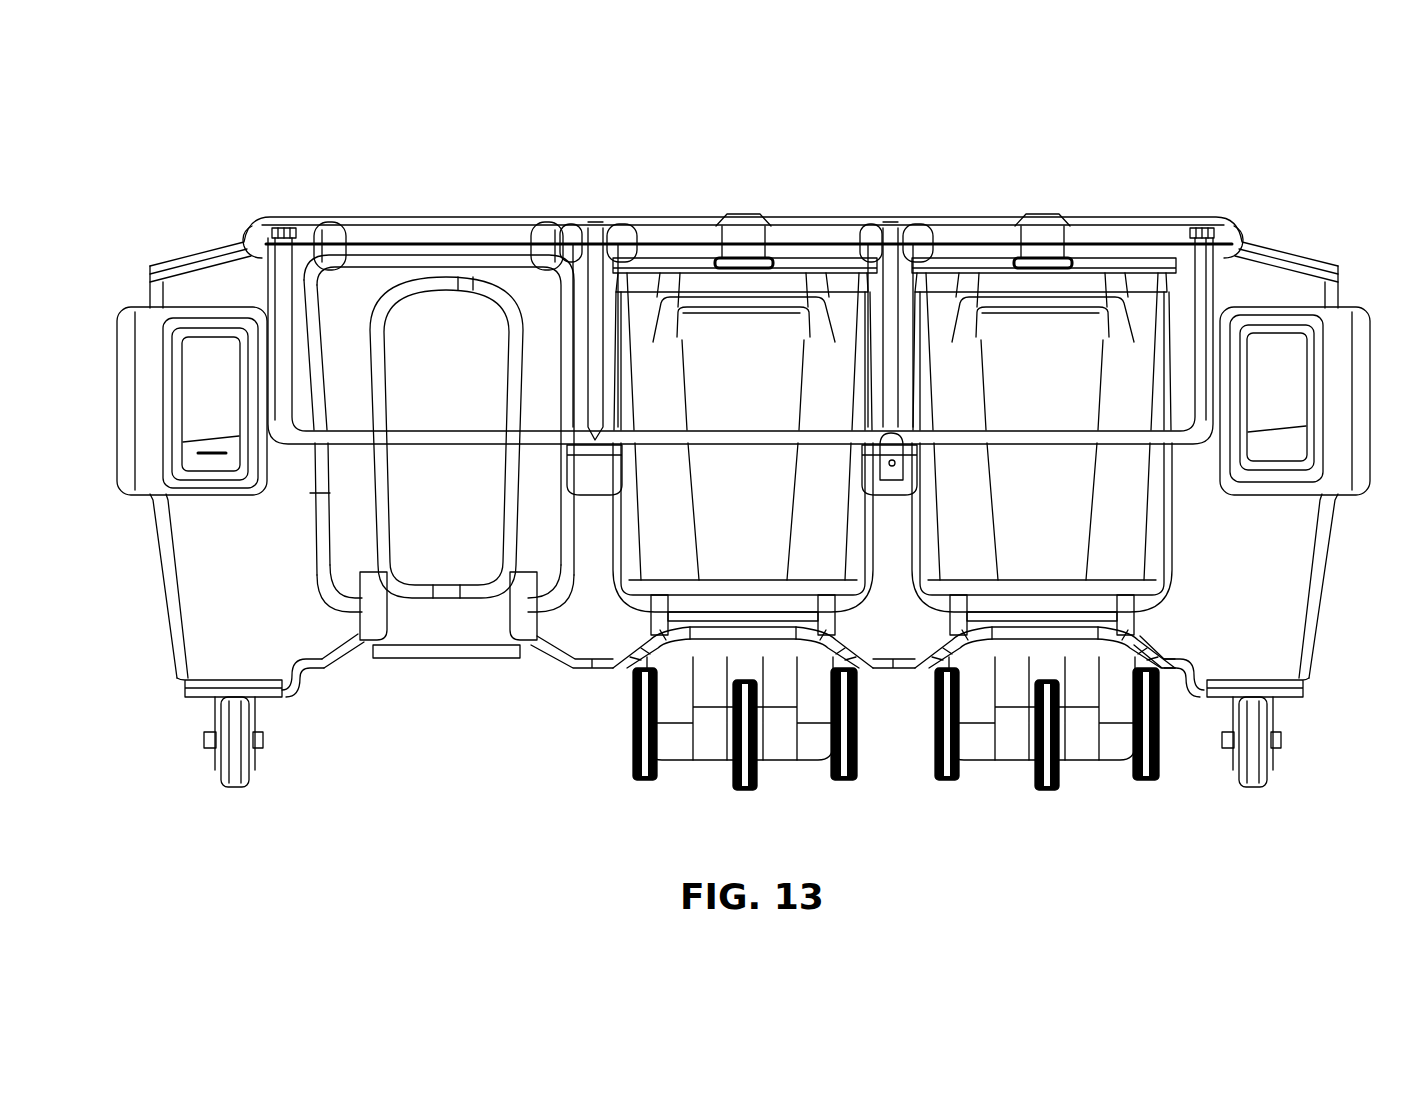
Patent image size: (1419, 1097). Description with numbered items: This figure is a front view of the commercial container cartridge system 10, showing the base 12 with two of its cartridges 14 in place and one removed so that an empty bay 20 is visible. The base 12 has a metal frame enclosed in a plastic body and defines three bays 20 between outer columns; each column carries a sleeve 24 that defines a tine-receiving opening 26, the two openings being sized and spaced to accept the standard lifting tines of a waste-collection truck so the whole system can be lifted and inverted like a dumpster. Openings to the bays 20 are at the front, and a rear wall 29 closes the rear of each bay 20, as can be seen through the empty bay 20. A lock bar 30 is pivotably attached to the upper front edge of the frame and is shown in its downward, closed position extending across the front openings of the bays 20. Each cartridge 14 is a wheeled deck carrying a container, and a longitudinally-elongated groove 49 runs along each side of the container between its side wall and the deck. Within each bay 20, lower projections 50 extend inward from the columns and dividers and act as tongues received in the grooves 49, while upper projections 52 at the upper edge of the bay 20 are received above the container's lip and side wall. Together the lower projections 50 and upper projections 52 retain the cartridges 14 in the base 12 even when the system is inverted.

The commercial container cartridge system 10 is at (768, 464).
The base 12 is at (1250, 228).
The cartridge 14 is at (857, 523).
The bay 20 is at (320, 365).
The sleeve 24 is at (200, 310).
The tine-receiving opening 26 is at (228, 401).
The rear wall 29 is at (443, 270).
The lock bar 30 is at (480, 437).
The groove 49 is at (620, 667).
The lower projection 50 is at (820, 618).
The upper projection 52 is at (343, 268).